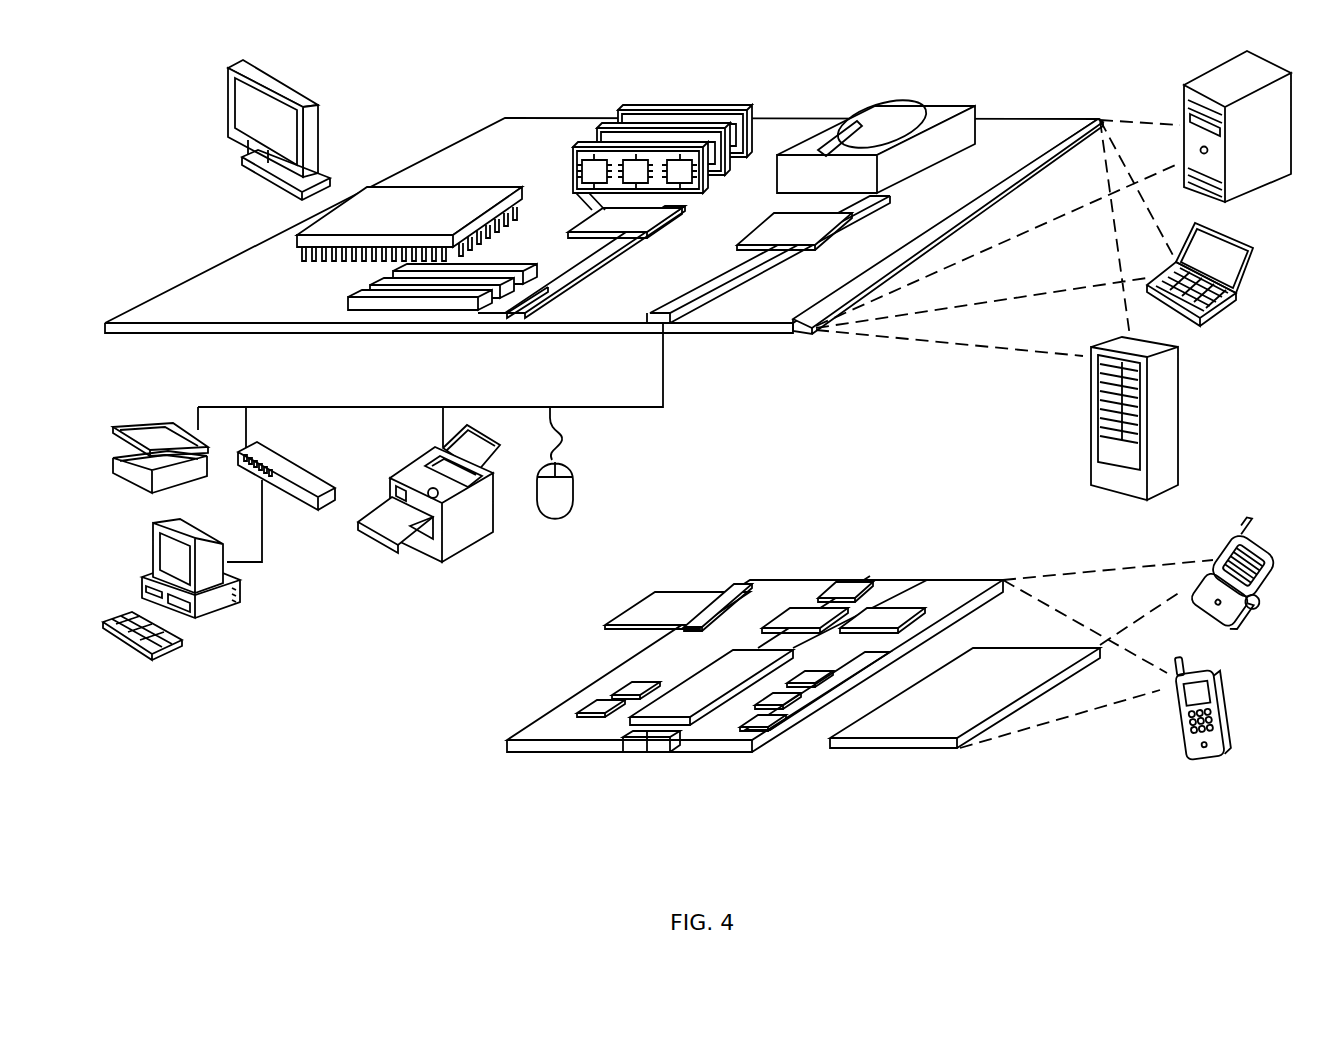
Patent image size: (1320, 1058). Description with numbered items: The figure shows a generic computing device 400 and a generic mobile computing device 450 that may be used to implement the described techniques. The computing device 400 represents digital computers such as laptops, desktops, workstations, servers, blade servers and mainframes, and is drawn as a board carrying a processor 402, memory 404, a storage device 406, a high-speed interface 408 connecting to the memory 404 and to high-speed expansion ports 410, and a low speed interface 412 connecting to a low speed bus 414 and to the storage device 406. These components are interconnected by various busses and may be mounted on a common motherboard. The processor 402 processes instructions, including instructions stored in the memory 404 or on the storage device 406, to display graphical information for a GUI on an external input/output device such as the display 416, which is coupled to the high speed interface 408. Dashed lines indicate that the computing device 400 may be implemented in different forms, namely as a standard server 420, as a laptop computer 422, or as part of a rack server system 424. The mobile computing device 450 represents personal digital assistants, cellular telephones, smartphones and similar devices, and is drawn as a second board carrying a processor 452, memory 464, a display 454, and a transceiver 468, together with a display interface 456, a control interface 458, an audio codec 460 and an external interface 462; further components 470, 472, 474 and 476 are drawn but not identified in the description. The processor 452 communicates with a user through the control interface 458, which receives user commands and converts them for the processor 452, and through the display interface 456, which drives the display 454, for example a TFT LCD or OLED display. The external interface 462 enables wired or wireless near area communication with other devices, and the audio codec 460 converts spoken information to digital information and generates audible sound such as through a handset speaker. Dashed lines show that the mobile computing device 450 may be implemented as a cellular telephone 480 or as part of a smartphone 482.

The computing device 400 is at (415, 93).
The processor 402 is at (266, 233).
The memory 404 is at (626, 111).
The storage device 406 is at (861, 97).
The high-speed interface 408 is at (592, 212).
The high-speed expansion ports 410 is at (350, 296).
The low speed interface 412 is at (770, 216).
The low speed bus 414 is at (668, 323).
The display 416 is at (228, 66).
The standard server 420 is at (1184, 100).
The laptop computer 422 is at (1252, 241).
The rack server system 424 is at (1090, 446).
The mobile computing device 450 is at (483, 748).
The processor 452 is at (684, 708).
The display 454 is at (920, 727).
The display interface 456 is at (760, 722).
The control interface 458 is at (790, 700).
The audio codec 460 is at (812, 676).
The external interface 462 is at (649, 743).
The memory 464 is at (584, 698).
The transceiver 468 is at (887, 617).
The chip 470 is at (852, 580).
The bar 472 is at (720, 597).
The plate 474 is at (650, 597).
The plate 476 is at (802, 618).
The cellular telephone 480 is at (1233, 534).
The smartphone 482 is at (1180, 710).